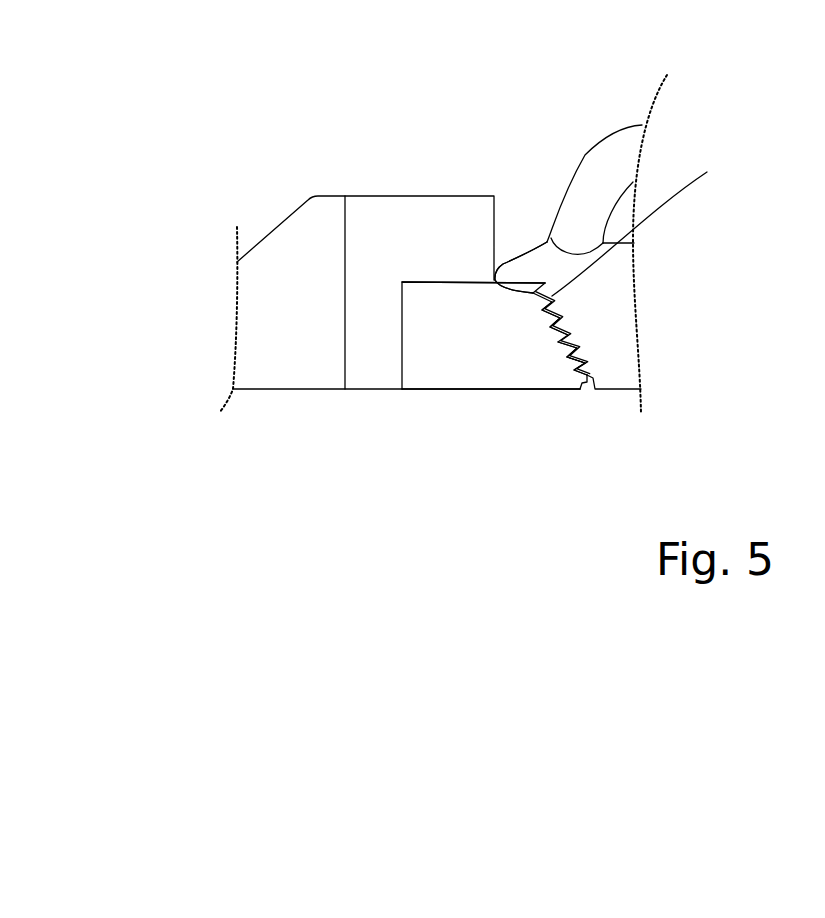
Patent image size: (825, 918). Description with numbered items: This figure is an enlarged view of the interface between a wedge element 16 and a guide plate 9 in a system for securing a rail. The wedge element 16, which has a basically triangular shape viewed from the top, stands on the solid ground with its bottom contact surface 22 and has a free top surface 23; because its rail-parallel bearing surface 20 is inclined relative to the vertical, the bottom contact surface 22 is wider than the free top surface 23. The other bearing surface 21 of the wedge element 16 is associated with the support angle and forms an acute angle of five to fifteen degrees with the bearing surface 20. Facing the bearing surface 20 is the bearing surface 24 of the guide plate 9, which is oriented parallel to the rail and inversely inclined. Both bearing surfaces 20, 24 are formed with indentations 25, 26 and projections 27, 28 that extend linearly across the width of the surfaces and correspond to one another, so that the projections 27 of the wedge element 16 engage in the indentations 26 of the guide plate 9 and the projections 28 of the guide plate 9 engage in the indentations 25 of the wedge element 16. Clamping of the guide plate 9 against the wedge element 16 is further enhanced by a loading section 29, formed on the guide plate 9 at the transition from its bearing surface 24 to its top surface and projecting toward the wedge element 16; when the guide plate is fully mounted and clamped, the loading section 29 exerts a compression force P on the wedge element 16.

The guide plate 9 is at (608, 293).
The wedge element 16 is at (435, 358).
The bearing surface 20 is at (545, 334).
The bearing surface 21 is at (400, 342).
The bottom contact surface 22 is at (446, 392).
The free top surface 23 is at (457, 278).
The bearing surface 24 is at (575, 312).
The indentation 25 is at (495, 270).
The indentation 26 is at (580, 372).
The projection 27 is at (570, 363).
The projection 28 is at (645, 227).
The loading section 29 is at (508, 265).
The compression force P is at (522, 278).